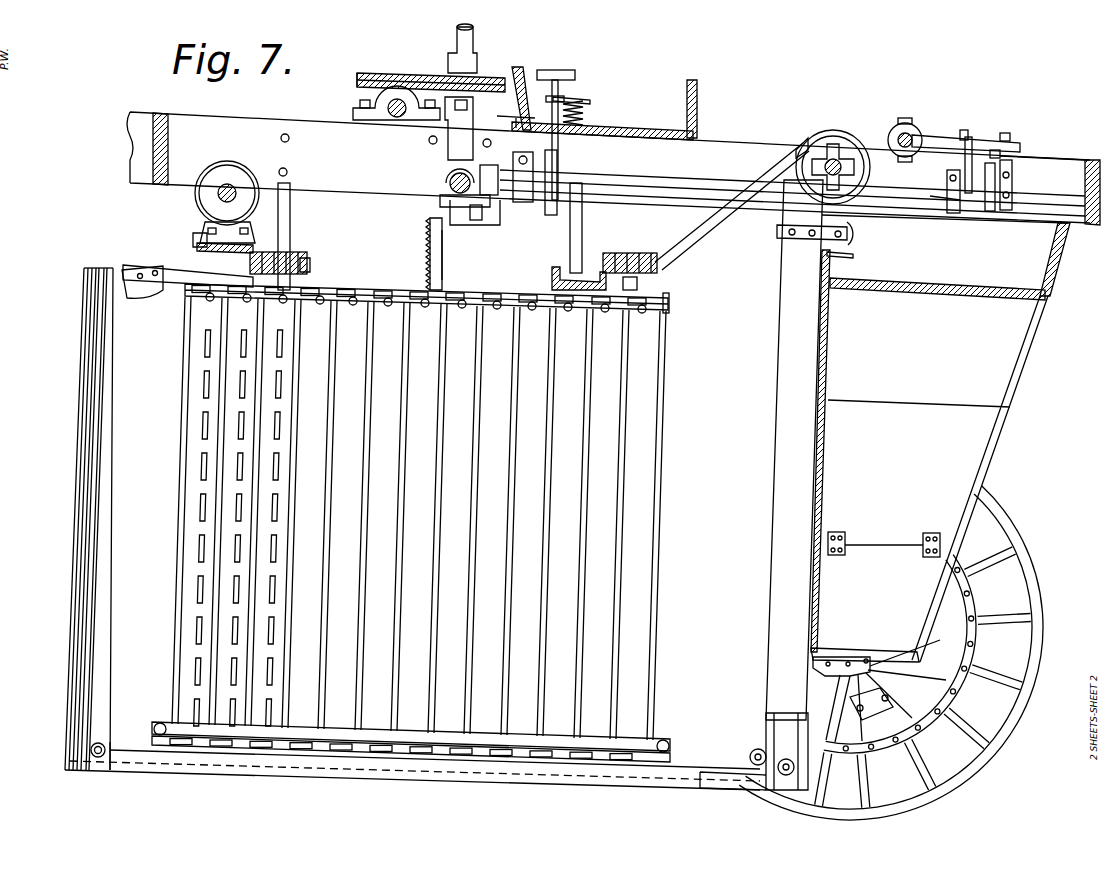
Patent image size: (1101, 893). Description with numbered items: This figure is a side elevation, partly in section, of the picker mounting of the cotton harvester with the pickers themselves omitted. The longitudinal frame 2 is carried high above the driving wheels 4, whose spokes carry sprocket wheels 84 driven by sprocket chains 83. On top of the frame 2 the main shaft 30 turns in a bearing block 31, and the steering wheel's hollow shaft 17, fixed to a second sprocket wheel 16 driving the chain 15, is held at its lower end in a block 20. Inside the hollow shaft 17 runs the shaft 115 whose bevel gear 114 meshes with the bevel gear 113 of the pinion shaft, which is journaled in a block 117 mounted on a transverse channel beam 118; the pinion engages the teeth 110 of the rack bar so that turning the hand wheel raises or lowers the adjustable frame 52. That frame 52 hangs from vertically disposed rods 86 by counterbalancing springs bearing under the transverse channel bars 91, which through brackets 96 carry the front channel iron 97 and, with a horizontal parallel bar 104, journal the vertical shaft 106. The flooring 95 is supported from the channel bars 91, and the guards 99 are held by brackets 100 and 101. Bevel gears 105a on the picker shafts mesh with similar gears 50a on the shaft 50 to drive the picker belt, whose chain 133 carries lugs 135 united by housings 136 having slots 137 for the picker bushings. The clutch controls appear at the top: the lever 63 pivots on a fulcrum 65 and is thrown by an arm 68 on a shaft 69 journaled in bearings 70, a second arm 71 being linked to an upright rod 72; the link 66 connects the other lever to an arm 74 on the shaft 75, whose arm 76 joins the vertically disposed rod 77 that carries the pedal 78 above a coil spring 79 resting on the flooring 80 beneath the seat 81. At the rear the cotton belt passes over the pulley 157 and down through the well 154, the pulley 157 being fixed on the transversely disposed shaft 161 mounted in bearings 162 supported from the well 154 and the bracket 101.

The longitudinal frame 2 is at (199, 122).
The driving wheels 4 is at (968, 758).
The chain 15 is at (360, 72).
The second sprocket wheel 16 is at (432, 72).
The hollow shaft 17 is at (471, 66).
The block 20 is at (443, 140).
The main shaft 30 is at (393, 119).
The bearing block 31 is at (355, 111).
The shaft 50 is at (231, 183).
The bevel gears 50a is at (198, 200).
The adjustable frame 52 is at (195, 248).
The lever 63 is at (990, 140).
The fulcrum 65 is at (1012, 140).
The link 66 is at (1015, 170).
The arm 68 is at (968, 137).
The shaft 69 is at (748, 185).
The bearings 70 is at (952, 185).
The second arm 71 is at (538, 176).
The inclined strut 72 is at (552, 87).
The arm 74 is at (988, 208).
The shaft 75 is at (566, 70).
The arm 76 is at (566, 200).
The vertically disposed rod 77 is at (580, 152).
The pedal 78 is at (590, 97).
The coil spring 79 is at (584, 115).
The flooring 80 is at (667, 128).
The seat 81 is at (691, 80).
The sprocket chains 83 is at (968, 646).
The sprocket wheels 84 is at (940, 692).
The vertically disposed rods 86 is at (290, 218).
The transverse channel bars 91 is at (308, 262).
The flooring 95 is at (725, 786).
The brackets 96 is at (300, 252).
The channel iron 97 is at (198, 263).
The guards 99 is at (72, 457).
The bracket 100 is at (178, 298).
The bracket 101 is at (755, 222).
The parallel bar 104 is at (428, 250).
The bevel gears 105a is at (200, 235).
The vertically disposed shaft 106 is at (670, 297).
The teeth 110 is at (428, 228).
The bevel gear 113 is at (447, 186).
The bevel gear 114 is at (435, 176).
The shaft 115 is at (497, 179).
The block 117 is at (472, 206).
The channel beam 118 is at (494, 216).
The chain 133 is at (403, 283).
The lugs 135 is at (322, 308).
The housings 136 is at (193, 492).
The slots 137 is at (197, 396).
The well 154 is at (785, 353).
The pulley 157 is at (846, 135).
The transversely disposed shaft 161 is at (836, 145).
The bearings 162 is at (812, 138).